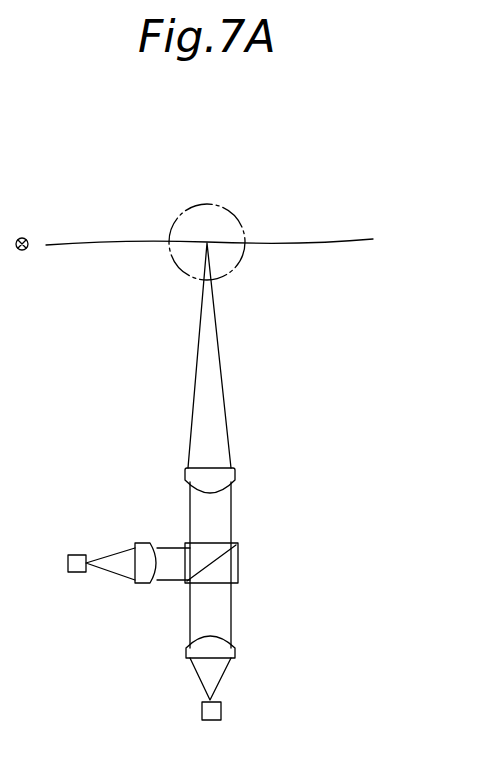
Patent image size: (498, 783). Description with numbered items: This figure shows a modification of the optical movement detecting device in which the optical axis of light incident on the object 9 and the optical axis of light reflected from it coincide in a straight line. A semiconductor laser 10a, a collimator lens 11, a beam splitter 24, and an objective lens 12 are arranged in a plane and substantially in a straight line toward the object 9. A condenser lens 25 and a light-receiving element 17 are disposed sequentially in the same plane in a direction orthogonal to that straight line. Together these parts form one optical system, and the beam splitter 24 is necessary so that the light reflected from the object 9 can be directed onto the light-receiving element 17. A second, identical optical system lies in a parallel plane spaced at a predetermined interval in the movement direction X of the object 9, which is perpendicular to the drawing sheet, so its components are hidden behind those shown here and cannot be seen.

The object 9 is at (352, 239).
The movement direction X is at (26, 232).
The objective lens 12 is at (235, 476).
The beam splitter 24 is at (238, 561).
The condenser lens 25 is at (143, 585).
The light-receiving element 17 is at (73, 573).
The collimator lens 11 is at (235, 652).
The semiconductor laser 10a is at (221, 712).